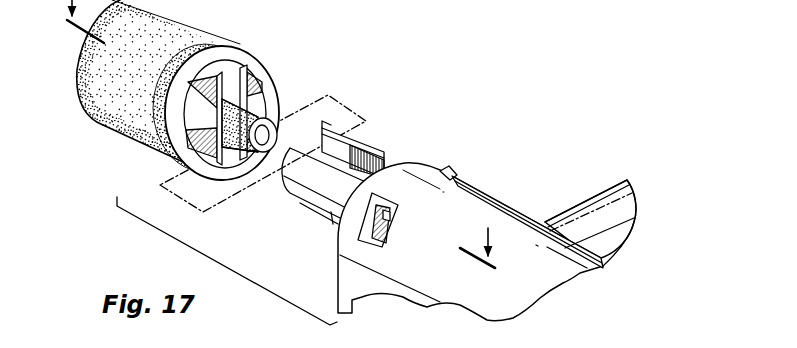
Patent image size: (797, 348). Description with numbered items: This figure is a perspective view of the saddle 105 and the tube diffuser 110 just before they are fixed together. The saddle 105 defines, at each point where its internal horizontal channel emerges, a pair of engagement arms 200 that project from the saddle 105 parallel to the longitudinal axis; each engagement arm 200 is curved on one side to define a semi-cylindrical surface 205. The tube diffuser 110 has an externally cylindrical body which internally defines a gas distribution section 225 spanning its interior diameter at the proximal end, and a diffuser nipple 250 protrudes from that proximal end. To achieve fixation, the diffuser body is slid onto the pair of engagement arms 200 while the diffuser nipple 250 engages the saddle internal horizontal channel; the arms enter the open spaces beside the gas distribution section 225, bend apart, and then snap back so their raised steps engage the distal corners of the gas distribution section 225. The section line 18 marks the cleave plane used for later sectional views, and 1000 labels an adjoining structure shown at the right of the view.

The section line 18- 18 is at (273, 144).
The tube diffuser 110 is at (108, 143).
The gas distribution section 225 is at (245, 99).
The diffuser nipple 250 is at (261, 155).
The engagement arm 200 is at (377, 150).
The semi-cylindrical surface 205 is at (328, 228).
The saddle 105 is at (521, 201).
The mounting plate 1000 is at (601, 183).